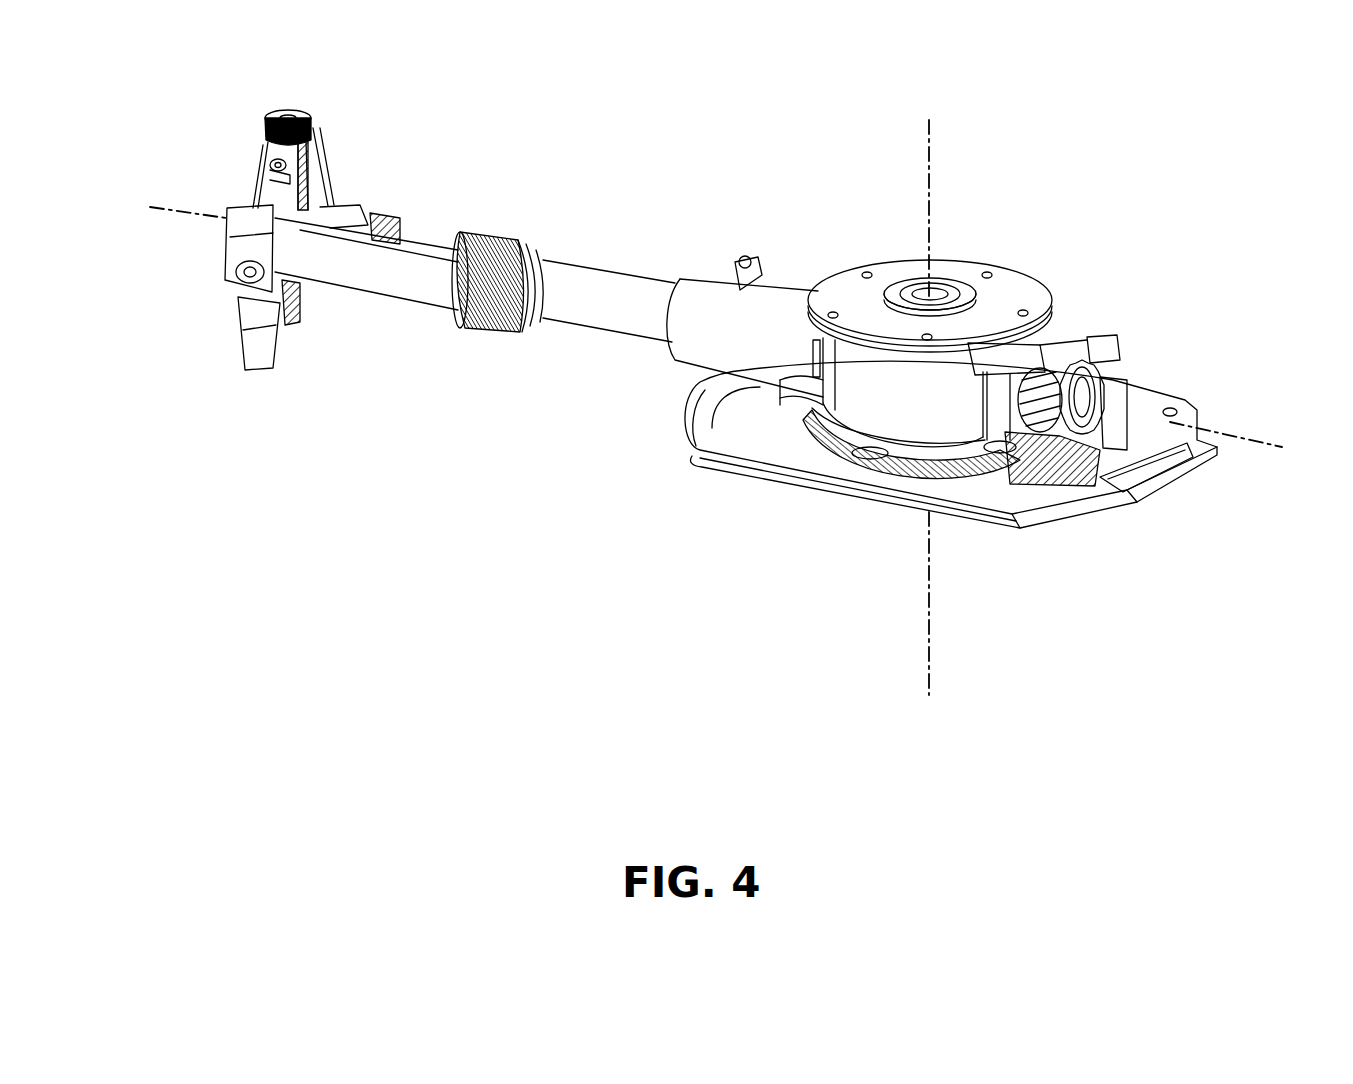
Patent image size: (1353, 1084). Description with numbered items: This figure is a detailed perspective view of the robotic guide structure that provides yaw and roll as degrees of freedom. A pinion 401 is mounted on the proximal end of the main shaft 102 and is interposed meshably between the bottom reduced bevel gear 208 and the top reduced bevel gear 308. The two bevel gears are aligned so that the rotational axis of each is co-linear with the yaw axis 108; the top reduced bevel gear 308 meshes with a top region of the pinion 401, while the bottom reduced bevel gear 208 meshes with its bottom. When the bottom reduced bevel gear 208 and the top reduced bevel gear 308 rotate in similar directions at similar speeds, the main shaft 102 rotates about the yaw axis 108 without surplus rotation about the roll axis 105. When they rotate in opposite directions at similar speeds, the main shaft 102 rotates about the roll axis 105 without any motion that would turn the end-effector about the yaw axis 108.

The main shaft 102 is at (610, 333).
The roll axis 105 is at (143, 205).
The yaw axis 108 is at (928, 178).
The bottom reduced bevel gear 208 is at (1040, 477).
The top reduced bevel gear 308 is at (1062, 330).
The pinion 401 is at (1103, 387).